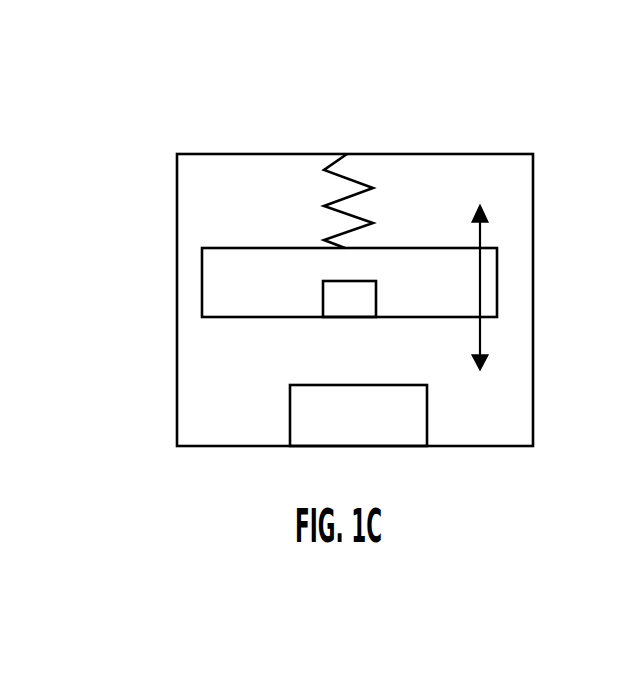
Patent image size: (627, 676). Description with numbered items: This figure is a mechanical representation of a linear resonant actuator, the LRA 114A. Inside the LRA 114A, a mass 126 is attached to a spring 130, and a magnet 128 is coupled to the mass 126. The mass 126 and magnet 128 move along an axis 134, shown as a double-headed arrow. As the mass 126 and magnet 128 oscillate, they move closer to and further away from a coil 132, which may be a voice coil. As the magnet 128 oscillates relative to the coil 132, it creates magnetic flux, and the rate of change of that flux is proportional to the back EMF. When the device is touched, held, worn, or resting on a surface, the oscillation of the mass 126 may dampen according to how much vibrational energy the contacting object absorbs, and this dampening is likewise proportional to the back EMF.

The LRA 114A is at (187, 110).
The mass 126 is at (248, 285).
The magnet 128 is at (367, 312).
The spring 130 is at (363, 180).
The coil 132 is at (333, 422).
The axis 134 is at (480, 333).